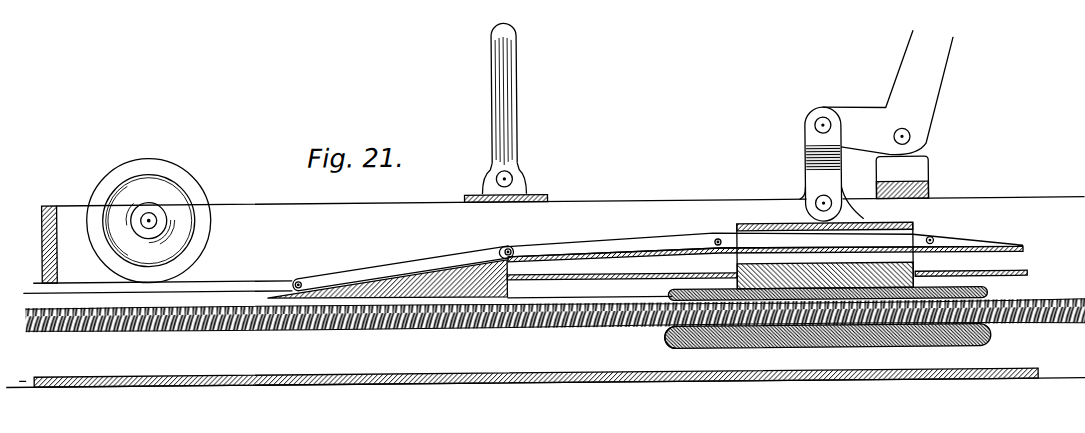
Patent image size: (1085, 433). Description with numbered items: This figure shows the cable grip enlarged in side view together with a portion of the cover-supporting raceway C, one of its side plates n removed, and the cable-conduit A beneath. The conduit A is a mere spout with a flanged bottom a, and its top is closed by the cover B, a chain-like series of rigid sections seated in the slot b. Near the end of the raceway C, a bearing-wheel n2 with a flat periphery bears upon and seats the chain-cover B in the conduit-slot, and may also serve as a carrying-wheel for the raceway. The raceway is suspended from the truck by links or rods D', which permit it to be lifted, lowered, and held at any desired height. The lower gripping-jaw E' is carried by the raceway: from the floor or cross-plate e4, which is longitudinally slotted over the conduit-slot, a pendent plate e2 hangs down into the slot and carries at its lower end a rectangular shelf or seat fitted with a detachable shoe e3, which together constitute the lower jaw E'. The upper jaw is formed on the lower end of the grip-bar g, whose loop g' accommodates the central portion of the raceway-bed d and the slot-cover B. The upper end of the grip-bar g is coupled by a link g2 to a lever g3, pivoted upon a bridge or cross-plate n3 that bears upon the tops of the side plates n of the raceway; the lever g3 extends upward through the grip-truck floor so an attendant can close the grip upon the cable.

The side plates n is at (558, 234).
The bearing-wheel n2 is at (148, 214).
The bridge or cross-plate n3 is at (902, 177).
The links or rods D' is at (505, 112).
The grip-bar g is at (825, 244).
The loop g' is at (835, 223).
The link g2 is at (842, 176).
The lever g3 is at (888, 92).
The cover B is at (242, 282).
The slot b is at (542, 280).
The raceway C is at (767, 266).
The raceway-bed d is at (922, 251).
The pendent plate e2 is at (995, 287).
The detachable shoe e3 is at (664, 336).
The cross-plate e4 is at (765, 260).
The lower gripping-jaw E' is at (828, 342).
The flanged bottom a is at (146, 288).
The conduit A is at (545, 361).